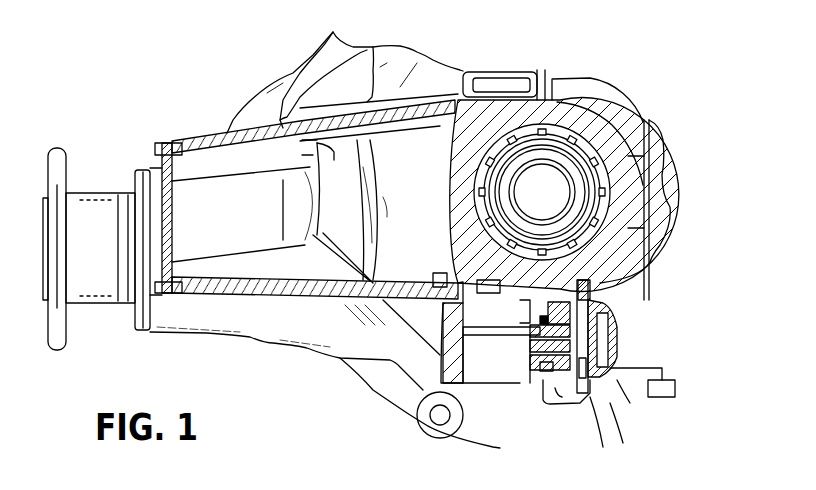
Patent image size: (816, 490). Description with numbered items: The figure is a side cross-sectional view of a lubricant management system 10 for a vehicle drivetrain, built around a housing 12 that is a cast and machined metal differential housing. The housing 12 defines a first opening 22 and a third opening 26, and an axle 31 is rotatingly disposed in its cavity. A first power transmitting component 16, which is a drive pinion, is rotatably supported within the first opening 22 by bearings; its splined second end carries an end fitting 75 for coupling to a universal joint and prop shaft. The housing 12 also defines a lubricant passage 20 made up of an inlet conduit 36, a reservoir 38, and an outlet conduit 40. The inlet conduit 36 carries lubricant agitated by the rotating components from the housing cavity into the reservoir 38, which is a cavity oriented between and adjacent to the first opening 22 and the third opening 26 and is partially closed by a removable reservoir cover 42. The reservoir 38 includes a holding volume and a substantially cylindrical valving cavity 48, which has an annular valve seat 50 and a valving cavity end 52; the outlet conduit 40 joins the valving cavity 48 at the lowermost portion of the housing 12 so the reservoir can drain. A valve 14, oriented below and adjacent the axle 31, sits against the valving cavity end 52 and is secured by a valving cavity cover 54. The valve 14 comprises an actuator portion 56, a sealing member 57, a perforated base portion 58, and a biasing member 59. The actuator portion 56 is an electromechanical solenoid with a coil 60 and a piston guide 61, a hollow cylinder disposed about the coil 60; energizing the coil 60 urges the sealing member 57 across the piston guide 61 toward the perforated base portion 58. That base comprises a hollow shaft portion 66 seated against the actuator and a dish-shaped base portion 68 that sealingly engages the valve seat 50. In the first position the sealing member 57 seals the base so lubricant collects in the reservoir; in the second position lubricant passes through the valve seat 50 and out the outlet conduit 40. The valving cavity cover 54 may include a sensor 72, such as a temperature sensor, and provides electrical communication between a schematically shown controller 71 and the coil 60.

The lubricant management system 10 is at (222, 76).
The housing 12 is at (452, 72).
The valve 14 is at (497, 343).
The first power transmitting component 16 is at (232, 211).
The lubricant passage 20 is at (414, 142).
The first opening 22 is at (132, 322).
The third opening 26 is at (600, 176).
The axle 31 is at (570, 205).
The inlet conduit 36 is at (318, 152).
The reservoir 38 is at (218, 247).
The outlet conduit 40 is at (555, 403).
The reservoir cover 42 is at (160, 162).
The valving cavity 48 is at (420, 284).
The valve seat 50 is at (547, 400).
The valving cavity end 52 is at (587, 397).
The valving cavity cover 54 is at (610, 308).
The actuator portion 56 is at (598, 283).
The sealing member 57 is at (558, 302).
The perforated base portion 58 is at (542, 316).
The biasing member 59 is at (520, 305).
The coil 60 is at (530, 333).
The piston guide 61 is at (590, 322).
The shaft portion 66 is at (563, 350).
The base portion 68 is at (540, 364).
The controller 71 is at (675, 388).
The sensor 72 is at (592, 380).
The end fitting 75 is at (91, 306).